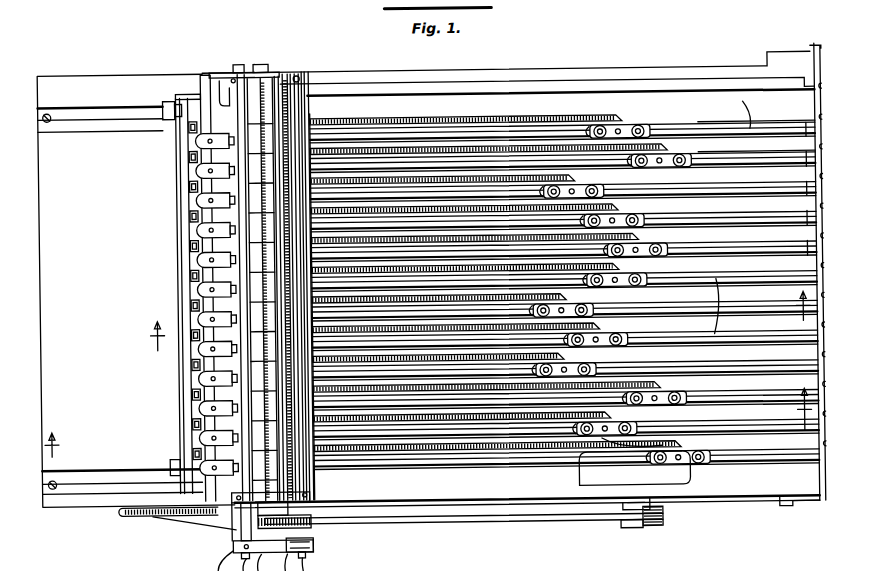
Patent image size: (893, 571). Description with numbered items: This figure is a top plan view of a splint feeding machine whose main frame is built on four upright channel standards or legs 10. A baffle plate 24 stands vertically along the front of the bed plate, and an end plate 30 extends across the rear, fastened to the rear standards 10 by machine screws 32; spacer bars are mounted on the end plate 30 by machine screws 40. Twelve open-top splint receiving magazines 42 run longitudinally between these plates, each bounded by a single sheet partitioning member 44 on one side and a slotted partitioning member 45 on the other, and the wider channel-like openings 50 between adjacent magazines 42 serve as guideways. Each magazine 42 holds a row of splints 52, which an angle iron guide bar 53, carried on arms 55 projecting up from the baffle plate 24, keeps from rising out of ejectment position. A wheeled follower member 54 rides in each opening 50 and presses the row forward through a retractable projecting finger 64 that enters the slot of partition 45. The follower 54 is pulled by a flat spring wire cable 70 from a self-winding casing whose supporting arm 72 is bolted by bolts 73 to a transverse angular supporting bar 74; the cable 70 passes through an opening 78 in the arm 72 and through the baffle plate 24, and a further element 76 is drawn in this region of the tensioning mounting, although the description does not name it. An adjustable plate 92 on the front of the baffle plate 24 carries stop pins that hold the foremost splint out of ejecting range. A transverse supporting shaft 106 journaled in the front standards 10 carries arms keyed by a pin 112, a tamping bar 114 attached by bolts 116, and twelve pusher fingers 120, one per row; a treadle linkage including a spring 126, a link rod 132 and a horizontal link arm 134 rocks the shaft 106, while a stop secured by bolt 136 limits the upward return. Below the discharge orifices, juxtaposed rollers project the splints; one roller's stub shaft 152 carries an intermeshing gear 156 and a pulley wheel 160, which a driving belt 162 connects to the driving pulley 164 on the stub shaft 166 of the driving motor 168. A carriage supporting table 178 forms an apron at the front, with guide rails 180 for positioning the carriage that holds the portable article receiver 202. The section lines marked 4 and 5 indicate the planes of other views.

The supporting channel standards or legs 10 is at (222, 68).
The baffle plate 24 is at (310, 99).
The end plate 30 is at (818, 103).
The machine screws 32 is at (822, 52).
The machine screws 40 is at (800, 212).
The splint receiving channels or magazines 42 is at (741, 205).
The partitioning member 44 is at (800, 145).
The partitioning member 45 is at (812, 249).
The channel-like openings 50 is at (716, 312).
The splint 52 is at (437, 180).
The angle iron guide bar 53 is at (316, 118).
The follower member 54 is at (654, 134).
The arms 55 is at (280, 96).
The retractable projecting finger 64 is at (690, 446).
The flat spring wire cable 70 is at (525, 170).
The supporting arm 72 is at (205, 440).
The bolts 73 is at (205, 292).
The angular supporting bar 74 is at (207, 84).
The support post 76 is at (236, 516).
The opening 78 is at (205, 168).
The plate 92 is at (228, 86).
The supporting shaft 106 is at (192, 243).
The pin 112 is at (238, 62).
The tamping bar 114 is at (302, 80).
The bolts 116 is at (300, 70).
The pusher fingers 120 is at (212, 354).
The spring 126 is at (150, 510).
The link rod 132 is at (190, 513).
The link arm 134 is at (312, 546).
The bolt 136 is at (233, 546).
The stub shaft 152 is at (312, 513).
The intermeshing gear 156 is at (300, 508).
The pulley wheel 160 is at (315, 526).
The driving belt 162 is at (452, 523).
The driving pulley 164 is at (655, 523).
The stub shaft 166 is at (630, 528).
The driving motor 168 is at (693, 408).
The carriage supporting table 178 is at (82, 122).
The guide rails 180 is at (108, 106).
The portable article receiver 202 is at (176, 214).
The section line 4 is at (428, 422).
The section line 5 is at (476, 322).